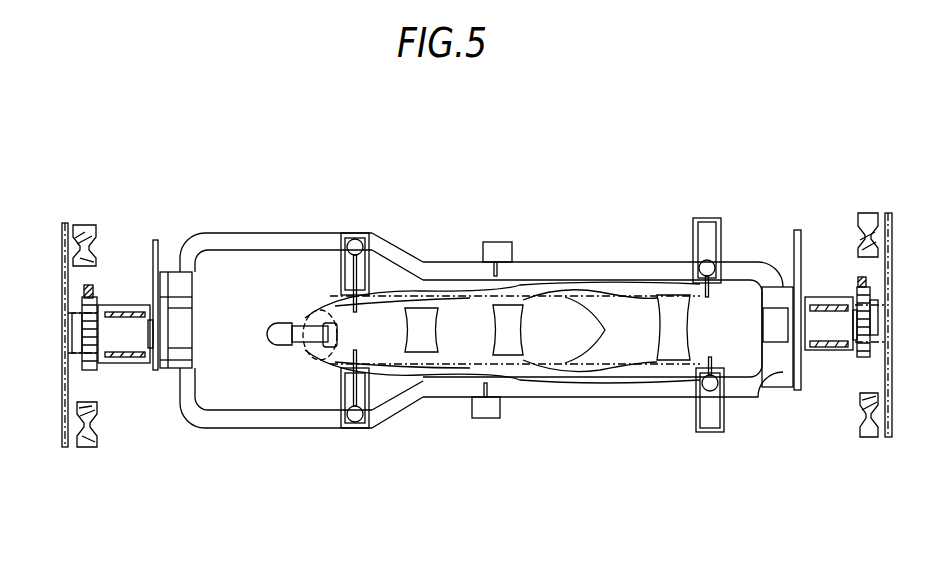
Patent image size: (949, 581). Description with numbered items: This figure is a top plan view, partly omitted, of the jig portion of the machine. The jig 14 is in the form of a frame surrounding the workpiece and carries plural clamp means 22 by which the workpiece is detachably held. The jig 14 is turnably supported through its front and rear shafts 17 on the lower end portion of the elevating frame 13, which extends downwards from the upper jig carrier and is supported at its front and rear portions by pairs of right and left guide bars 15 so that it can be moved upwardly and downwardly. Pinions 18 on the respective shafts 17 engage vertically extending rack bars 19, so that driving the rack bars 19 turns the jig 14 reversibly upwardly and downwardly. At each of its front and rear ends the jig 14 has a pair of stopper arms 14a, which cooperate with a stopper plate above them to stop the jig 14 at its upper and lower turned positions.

The elevating frame 13 is at (128, 358).
The jig 14 is at (283, 243).
The stopper arms 14a is at (157, 241).
The guide bars 15 is at (77, 258).
The shafts 17 is at (153, 360).
The pinions 18 is at (88, 335).
The rack bars 19 is at (86, 290).
The clamp means 22 is at (342, 300).